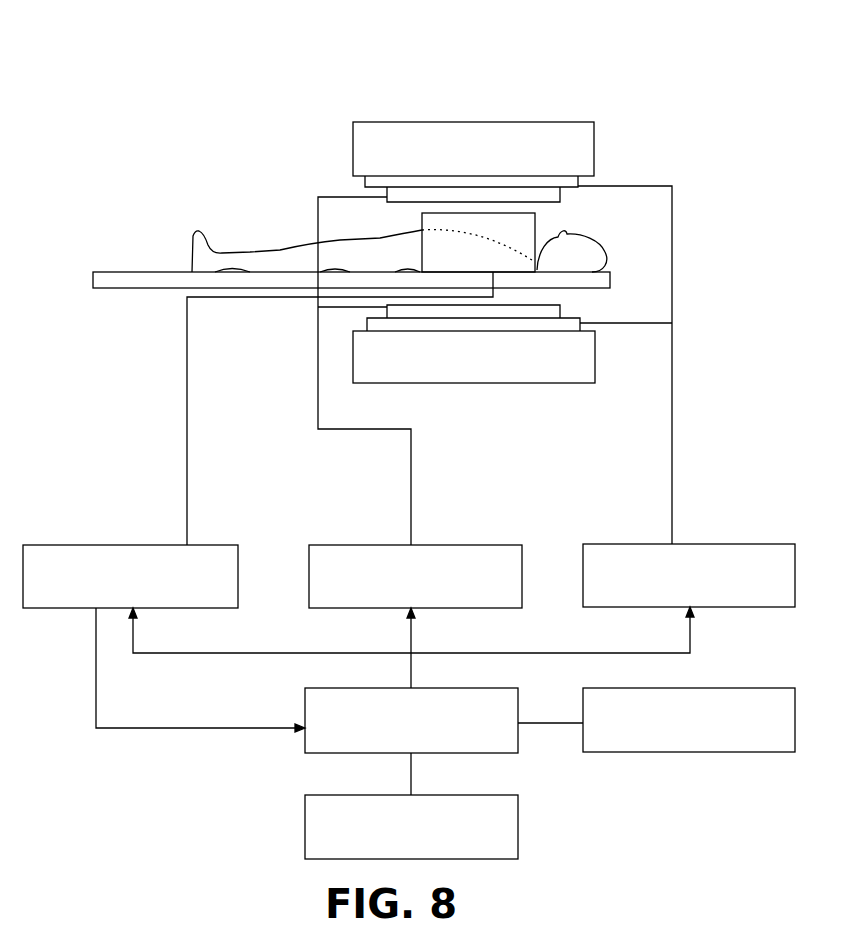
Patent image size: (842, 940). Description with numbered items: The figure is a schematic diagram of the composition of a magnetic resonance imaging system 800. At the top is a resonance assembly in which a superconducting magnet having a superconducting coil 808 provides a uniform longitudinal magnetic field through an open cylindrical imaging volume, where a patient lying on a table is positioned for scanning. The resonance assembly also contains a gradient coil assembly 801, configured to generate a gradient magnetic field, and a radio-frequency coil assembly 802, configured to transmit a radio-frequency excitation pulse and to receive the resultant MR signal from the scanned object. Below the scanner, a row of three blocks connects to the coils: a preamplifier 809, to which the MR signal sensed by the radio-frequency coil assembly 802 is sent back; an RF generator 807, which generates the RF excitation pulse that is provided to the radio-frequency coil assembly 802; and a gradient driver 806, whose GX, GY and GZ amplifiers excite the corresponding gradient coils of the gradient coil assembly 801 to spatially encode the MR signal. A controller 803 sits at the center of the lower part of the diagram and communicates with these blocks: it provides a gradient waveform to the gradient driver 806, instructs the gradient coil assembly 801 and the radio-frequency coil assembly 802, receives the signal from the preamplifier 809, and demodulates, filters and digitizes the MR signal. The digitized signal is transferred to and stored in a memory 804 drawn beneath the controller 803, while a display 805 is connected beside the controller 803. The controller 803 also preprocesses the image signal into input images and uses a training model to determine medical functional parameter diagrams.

The system 800 is at (103, 39).
The gradient coil assembly 801 is at (622, 185).
The radio-frequency coil assembly 802 is at (316, 195).
The controller 803 is at (480, 686).
The memory 804 is at (480, 793).
The display 805 is at (745, 686).
The gradient driver 806 is at (735, 542).
The RF generator 807 is at (478, 543).
The superconducting coil 808 is at (503, 118).
The preamplifier 809 is at (72, 543).